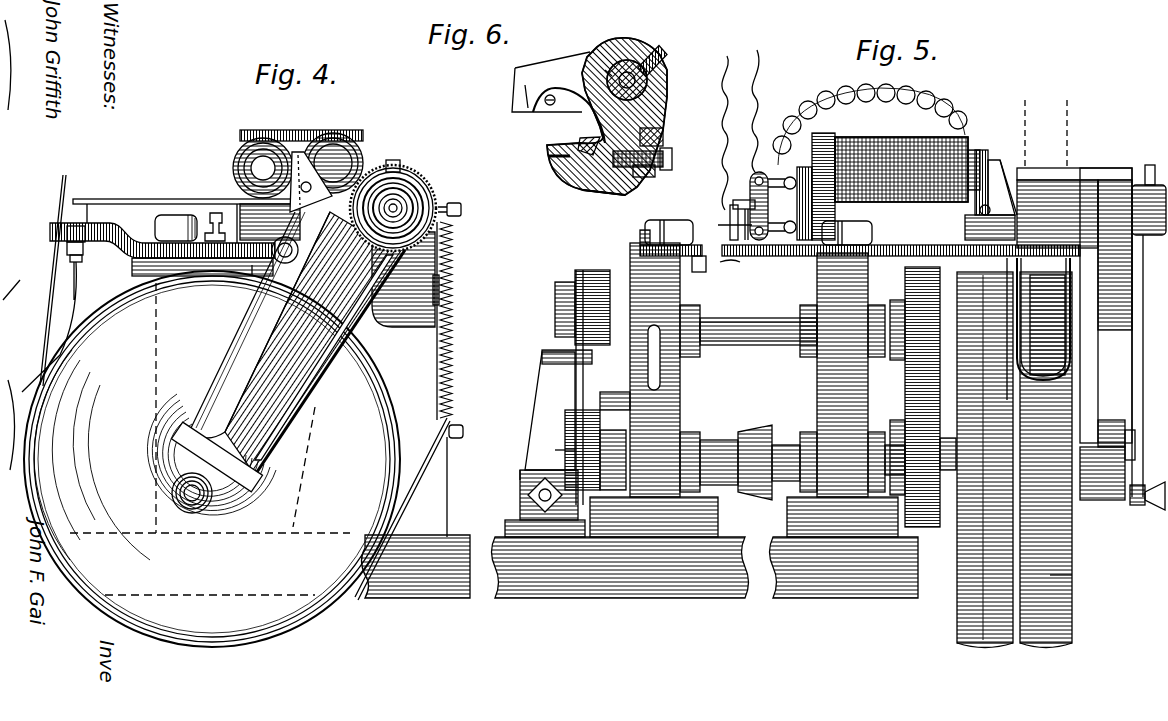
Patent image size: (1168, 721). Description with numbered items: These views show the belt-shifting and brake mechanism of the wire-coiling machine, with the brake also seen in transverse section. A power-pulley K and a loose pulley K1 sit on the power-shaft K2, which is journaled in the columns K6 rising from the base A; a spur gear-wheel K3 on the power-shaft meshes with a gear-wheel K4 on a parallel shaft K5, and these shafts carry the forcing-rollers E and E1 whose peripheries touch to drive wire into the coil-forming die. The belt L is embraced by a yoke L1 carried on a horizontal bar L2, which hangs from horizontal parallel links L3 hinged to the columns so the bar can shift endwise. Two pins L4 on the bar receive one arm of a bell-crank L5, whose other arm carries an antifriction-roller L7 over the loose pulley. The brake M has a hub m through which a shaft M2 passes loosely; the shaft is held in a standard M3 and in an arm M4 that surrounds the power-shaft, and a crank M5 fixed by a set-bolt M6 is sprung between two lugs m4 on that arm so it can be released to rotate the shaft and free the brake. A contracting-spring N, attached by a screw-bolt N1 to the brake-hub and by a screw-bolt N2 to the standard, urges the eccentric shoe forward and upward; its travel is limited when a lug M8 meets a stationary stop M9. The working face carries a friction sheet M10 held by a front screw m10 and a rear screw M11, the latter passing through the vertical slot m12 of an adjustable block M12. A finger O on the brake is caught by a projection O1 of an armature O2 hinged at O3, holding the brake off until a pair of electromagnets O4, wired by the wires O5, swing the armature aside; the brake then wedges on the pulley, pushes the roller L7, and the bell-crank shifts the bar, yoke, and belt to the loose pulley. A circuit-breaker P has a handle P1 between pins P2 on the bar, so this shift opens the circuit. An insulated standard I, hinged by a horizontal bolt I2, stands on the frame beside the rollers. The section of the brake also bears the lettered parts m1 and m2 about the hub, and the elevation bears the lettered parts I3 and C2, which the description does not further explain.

In FIG. 4, the power-pulley K is at (212, 459).
In FIG. 5, the power-pulley K is at (1072, 630).
In FIG. 5, the loose pulley K1 is at (957, 640).
In FIG. 5, the power-shaft K2 is at (790, 480).
In FIG. 5, the spur gear-wheel K3 is at (905, 520).
In FIG. 5, the gear-wheel K4 is at (918, 372).
In FIG. 5, the shaft K5 is at (780, 320).
In FIG. 5, the columns K6 is at (734, 370).
In FIG. 4, the belt L is at (398, 498).
In FIG. 5, the belt L is at (1068, 573).
In FIG. 4, the yoke L1 is at (73, 338).
In FIG. 5, the yoke L1 is at (1045, 382).
In FIG. 4, the horizontal bar L2 is at (86, 247).
In FIG. 5, the horizontal bar L2 is at (705, 262).
In FIG. 4, the horizontal parallel links L3 is at (145, 231).
In FIG. 5, the horizontal parallel links L3 is at (645, 232).
In FIG. 4, the pins L4 is at (62, 234).
In FIG. 5, the pins L4 is at (974, 216).
In FIG. 4, the bell-crank L5 is at (213, 252).
In FIG. 5, the bell-crank L5 is at (935, 262).
In FIG. 4, the antifriction-roller L7 is at (244, 292).
In FIG. 6, the brake M is at (680, 82).
In FIG. 5, the brake M is at (1074, 296).
In FIG. 4, the shaft M2 is at (398, 208).
In FIG. 6, the shaft M2 is at (612, 76).
In FIG. 4, the standard M3 is at (403, 302).
In FIG. 4, the arm M4 is at (297, 343).
In FIG. 5, the arm M4 is at (1092, 380).
In FIG. 4, the crank M5 is at (224, 426).
In FIG. 5, the crank M5 is at (1138, 415).
In FIG. 4, the set-bolt M6 is at (406, 172).
In FIG. 5, the set-bolt M6 is at (1146, 165).
In FIG. 6, the lug M8 is at (585, 138).
In FIG. 6, the stationary stop M9 is at (540, 110).
In FIG. 6, the sheet M10 is at (595, 196).
In FIG. 6, the screw M11 is at (674, 158).
In FIG. 6, the adjustable block M12 is at (665, 138).
In FIG. 6, the hub m is at (630, 60).
In FIG. 6, the bore m1 is at (668, 68).
In FIG. 5, the bore m1 is at (1046, 134).
In FIG. 6, the set screw m2 is at (660, 48).
In FIG. 4, the lugs m4 is at (186, 437).
In FIG. 6, the screw m10 is at (548, 154).
In FIG. 6, the vertical slot m12 is at (655, 177).
In FIG. 4, the contracting-spring N is at (455, 334).
In FIG. 4, the screw-bolt N1 is at (461, 210).
In FIG. 4, the screw-bolt N2 is at (463, 431).
In FIG. 5, the finger O is at (1006, 175).
In FIG. 4, the projection O1 is at (298, 152).
In FIG. 5, the projection O1 is at (1000, 160).
In FIG. 5, the armature O2 is at (982, 150).
In FIG. 4, the hinge O3 is at (238, 198).
In FIG. 5, the hinge O3 is at (975, 204).
In FIG. 4, the electromagnets O4 is at (236, 163).
In FIG. 5, the electromagnets O4 is at (894, 140).
In FIG. 4, the wires O5 is at (263, 168).
In FIG. 5, the wires O5 is at (728, 66).
In FIG. 5, the switch or circuit-breaker P is at (773, 206).
In FIG. 4, the handle P1 is at (193, 213).
In FIG. 5, the handle P1 is at (742, 209).
In FIG. 4, the pins P2 is at (97, 205).
In FIG. 5, the pins P2 is at (727, 222).
In FIG. 4, the frame A is at (416, 566).
In FIG. 5, the frame A is at (620, 547).
In FIG. 5, the roller E is at (578, 272).
In FIG. 5, the roller E1 is at (560, 452).
In FIG. 5, the insulated standard I is at (533, 495).
In FIG. 5, the horizontal bolt I2 is at (520, 480).
In FIG. 5, the bracket arm I3 is at (548, 380).
In FIG. 5, the clip C2 is at (739, 262).